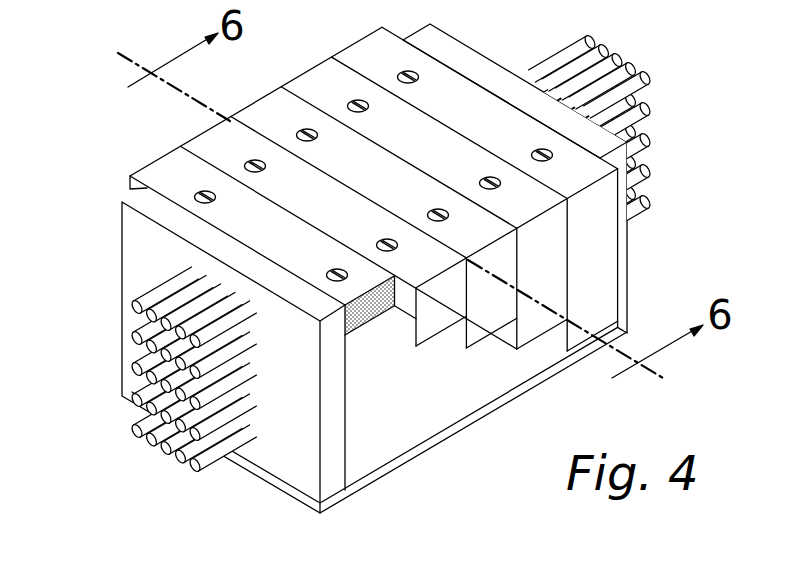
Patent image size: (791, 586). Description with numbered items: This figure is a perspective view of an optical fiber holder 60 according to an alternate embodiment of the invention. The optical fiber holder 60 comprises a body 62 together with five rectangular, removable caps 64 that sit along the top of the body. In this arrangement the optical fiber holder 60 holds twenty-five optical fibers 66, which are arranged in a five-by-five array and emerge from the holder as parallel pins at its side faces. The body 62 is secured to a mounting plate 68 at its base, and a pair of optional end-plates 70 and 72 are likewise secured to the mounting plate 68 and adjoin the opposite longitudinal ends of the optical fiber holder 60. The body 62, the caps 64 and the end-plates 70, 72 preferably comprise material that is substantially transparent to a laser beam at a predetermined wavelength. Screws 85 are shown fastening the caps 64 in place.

The optical fiber holder 60 is at (96, 122).
The body 62 is at (386, 412).
The removable caps 64 is at (203, 137).
The optical fibers 66 is at (146, 316).
The mounting plate 68 is at (402, 462).
The end-plate 70 is at (128, 248).
The end-plate 72 is at (450, 47).
The screws 85 is at (337, 268).